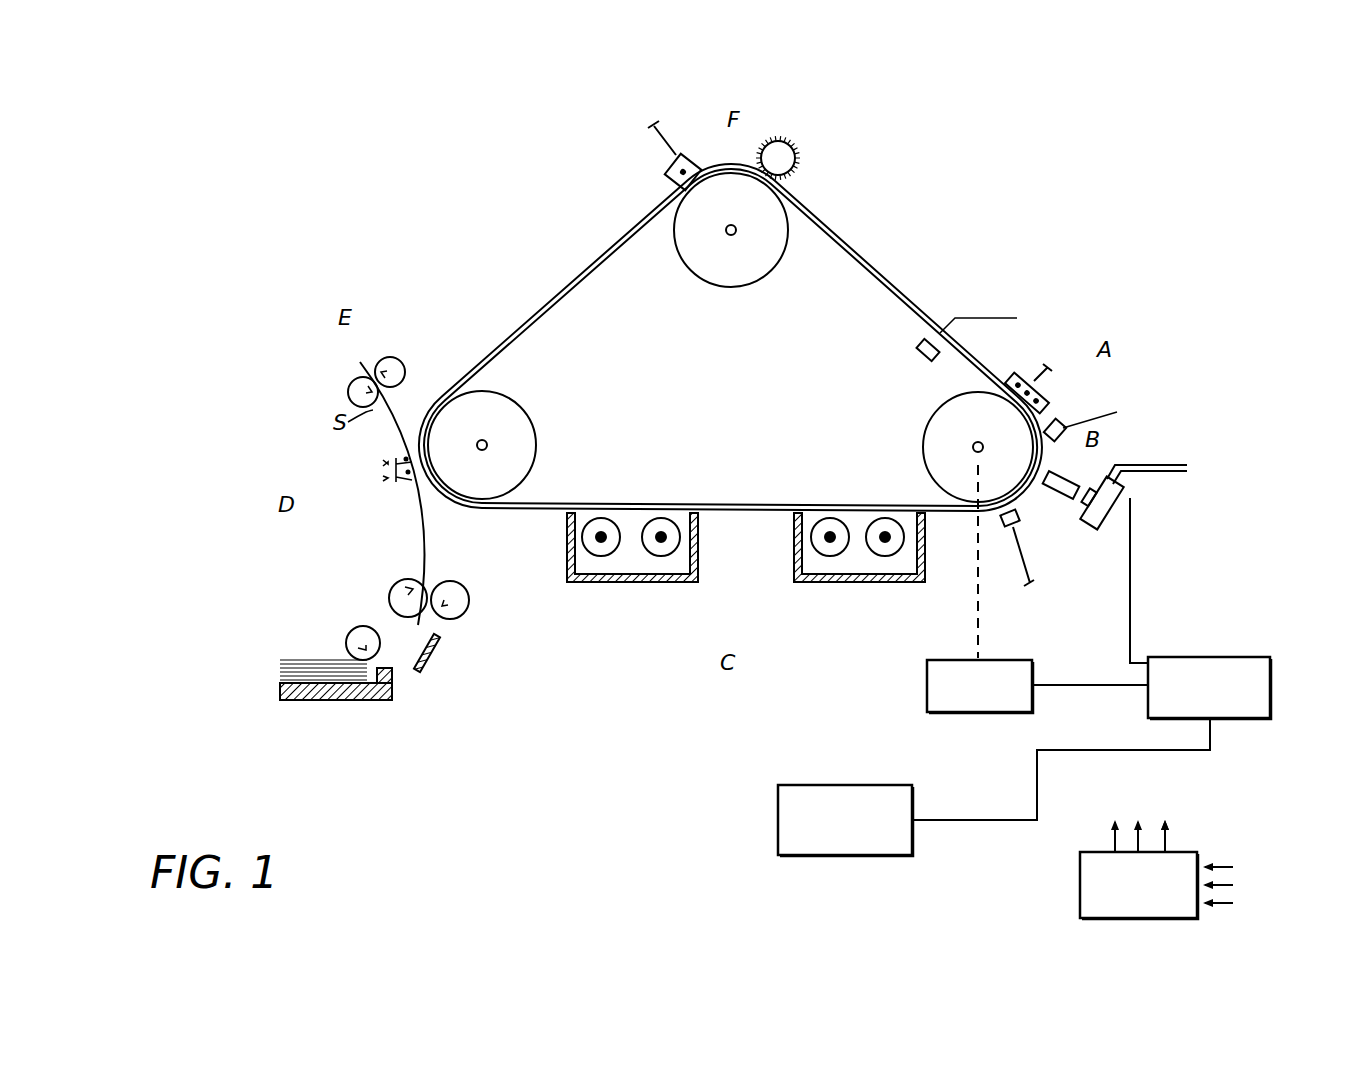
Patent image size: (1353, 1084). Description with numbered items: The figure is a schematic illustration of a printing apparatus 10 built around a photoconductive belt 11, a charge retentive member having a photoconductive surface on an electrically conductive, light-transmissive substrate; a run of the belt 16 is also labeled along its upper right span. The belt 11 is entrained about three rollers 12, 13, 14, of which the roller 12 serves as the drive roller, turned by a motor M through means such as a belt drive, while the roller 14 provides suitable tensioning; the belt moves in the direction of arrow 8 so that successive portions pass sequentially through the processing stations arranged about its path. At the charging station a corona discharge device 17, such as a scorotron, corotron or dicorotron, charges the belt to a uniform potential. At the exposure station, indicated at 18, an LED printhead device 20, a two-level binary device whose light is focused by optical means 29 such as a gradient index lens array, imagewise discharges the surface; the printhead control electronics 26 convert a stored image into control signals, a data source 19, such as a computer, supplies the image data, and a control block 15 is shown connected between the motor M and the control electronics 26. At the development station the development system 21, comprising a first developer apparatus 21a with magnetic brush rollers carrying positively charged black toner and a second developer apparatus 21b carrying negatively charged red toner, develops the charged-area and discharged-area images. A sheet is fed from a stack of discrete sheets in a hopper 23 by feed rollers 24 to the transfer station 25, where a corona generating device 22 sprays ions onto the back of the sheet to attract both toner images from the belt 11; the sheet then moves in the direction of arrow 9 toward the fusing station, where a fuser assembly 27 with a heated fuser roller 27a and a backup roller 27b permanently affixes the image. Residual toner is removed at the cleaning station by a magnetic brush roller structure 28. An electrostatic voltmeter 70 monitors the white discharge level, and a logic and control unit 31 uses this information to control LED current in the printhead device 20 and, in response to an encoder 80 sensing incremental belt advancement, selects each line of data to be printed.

The printing apparatus 10 is at (450, 185).
The arrow 8 is at (686, 487).
The arrow 9 is at (393, 415).
The photoconductive belt 11 is at (527, 327).
The roller 12 is at (937, 412).
The roller 13 is at (773, 275).
The roller 14 is at (533, 423).
The motor control 15 is at (1147, 710).
The photoconductive belt 16 is at (883, 282).
The corona discharge device 17 is at (1058, 396).
The exposure station 18 is at (1090, 470).
The data source 19 is at (915, 840).
The LED printhead device 20 is at (1097, 527).
The development system 21 is at (727, 605).
The first developer apparatus 21a is at (602, 592).
The second developer apparatus 21b is at (860, 592).
The corona generating device 22 is at (380, 476).
The paper supply 23 is at (347, 700).
The rollers 24 is at (393, 582).
The transfer station 25 is at (345, 554).
The printhead control electronics 26 is at (918, 350).
The fuser assembly 27 is at (359, 373).
The heated fuser roller 27a is at (348, 397).
The backup roller 27b is at (393, 360).
The magnetic brush roller structure 28 is at (796, 140).
The optical means 29 is at (1065, 498).
The logic and control unit 31 is at (1080, 877).
The electrostatic voltmeter 70 is at (1004, 527).
The encoder 80 is at (1078, 446).